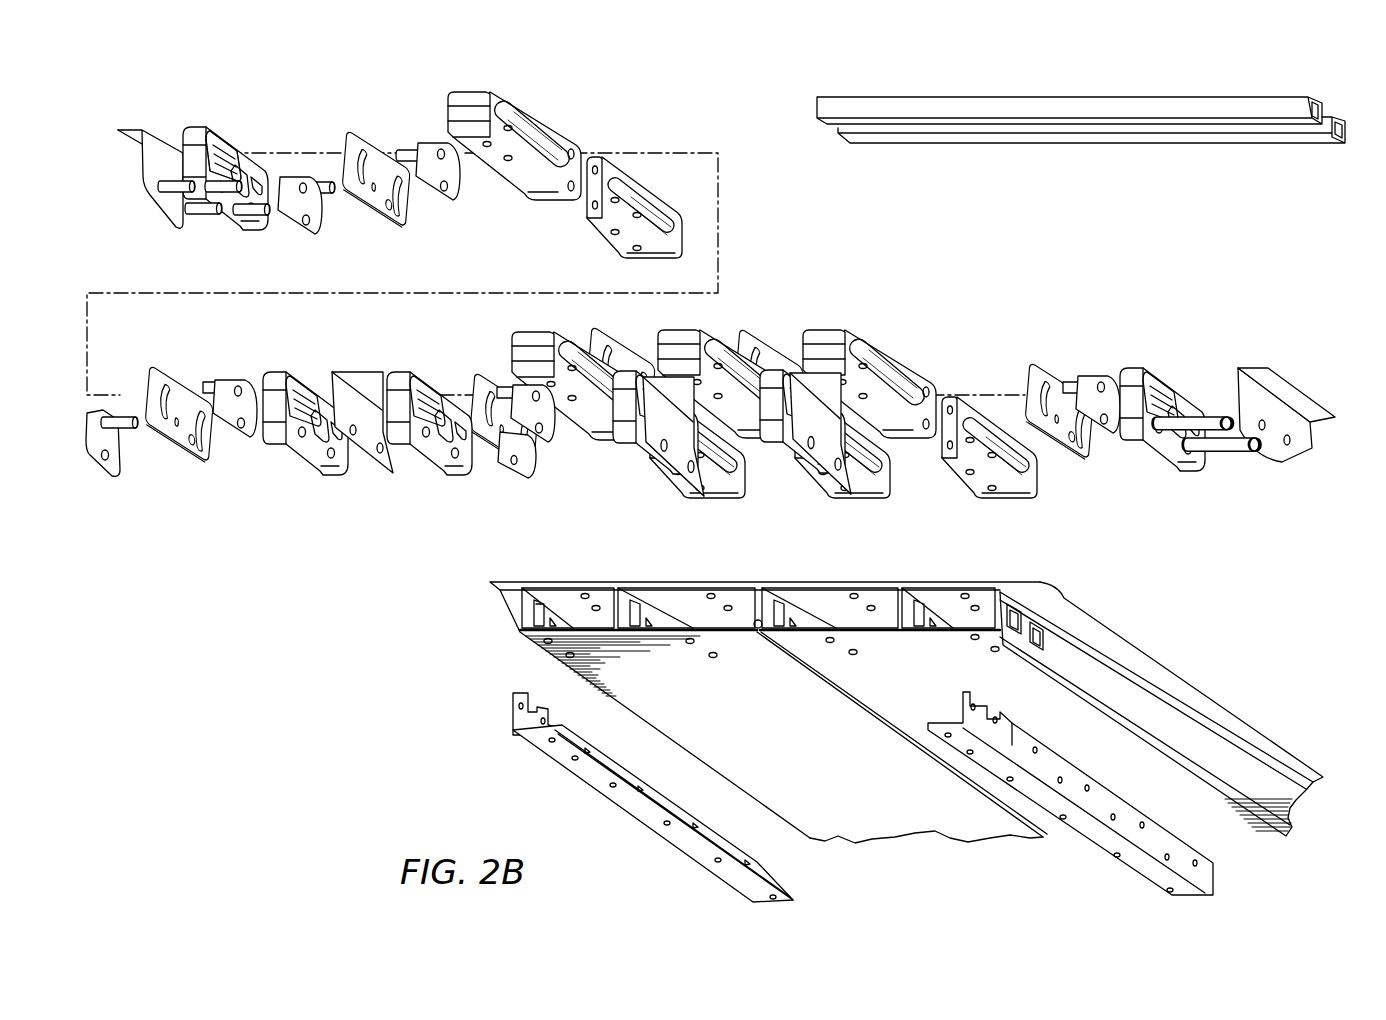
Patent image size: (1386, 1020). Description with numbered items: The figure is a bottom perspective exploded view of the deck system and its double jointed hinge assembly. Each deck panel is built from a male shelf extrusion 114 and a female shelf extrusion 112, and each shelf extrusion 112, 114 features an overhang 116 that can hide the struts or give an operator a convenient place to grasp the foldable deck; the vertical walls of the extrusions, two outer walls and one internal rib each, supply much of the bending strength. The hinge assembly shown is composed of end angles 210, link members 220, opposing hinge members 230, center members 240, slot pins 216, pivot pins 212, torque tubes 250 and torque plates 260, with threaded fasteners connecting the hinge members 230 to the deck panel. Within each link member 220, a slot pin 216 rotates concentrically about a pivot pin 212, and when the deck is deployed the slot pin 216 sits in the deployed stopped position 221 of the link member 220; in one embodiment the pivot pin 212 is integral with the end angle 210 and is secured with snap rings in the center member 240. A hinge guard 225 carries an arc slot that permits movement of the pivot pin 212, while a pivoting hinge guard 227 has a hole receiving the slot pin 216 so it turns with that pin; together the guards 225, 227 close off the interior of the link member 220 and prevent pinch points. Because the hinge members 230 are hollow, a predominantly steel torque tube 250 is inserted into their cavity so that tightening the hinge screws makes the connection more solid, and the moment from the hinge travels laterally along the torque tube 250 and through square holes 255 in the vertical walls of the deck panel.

The female shelf extrusion 112 is at (800, 744).
The male shelf extrusion 114 is at (937, 687).
The overhang 116 is at (1130, 663).
The end angle 210 is at (135, 128).
The pivot pin 212 is at (162, 210).
The slot pin 216 is at (327, 198).
The link member 220 is at (197, 128).
The deployed stopped position 221 is at (222, 135).
The hinge guard 225 is at (417, 222).
The pivoting hinge guard 227 is at (310, 238).
The hinge member 230 is at (557, 124).
The center member 240 is at (355, 372).
The torque tube 250 is at (1197, 138).
The square holes 255 is at (1045, 640).
The torque plate 260 is at (567, 773).